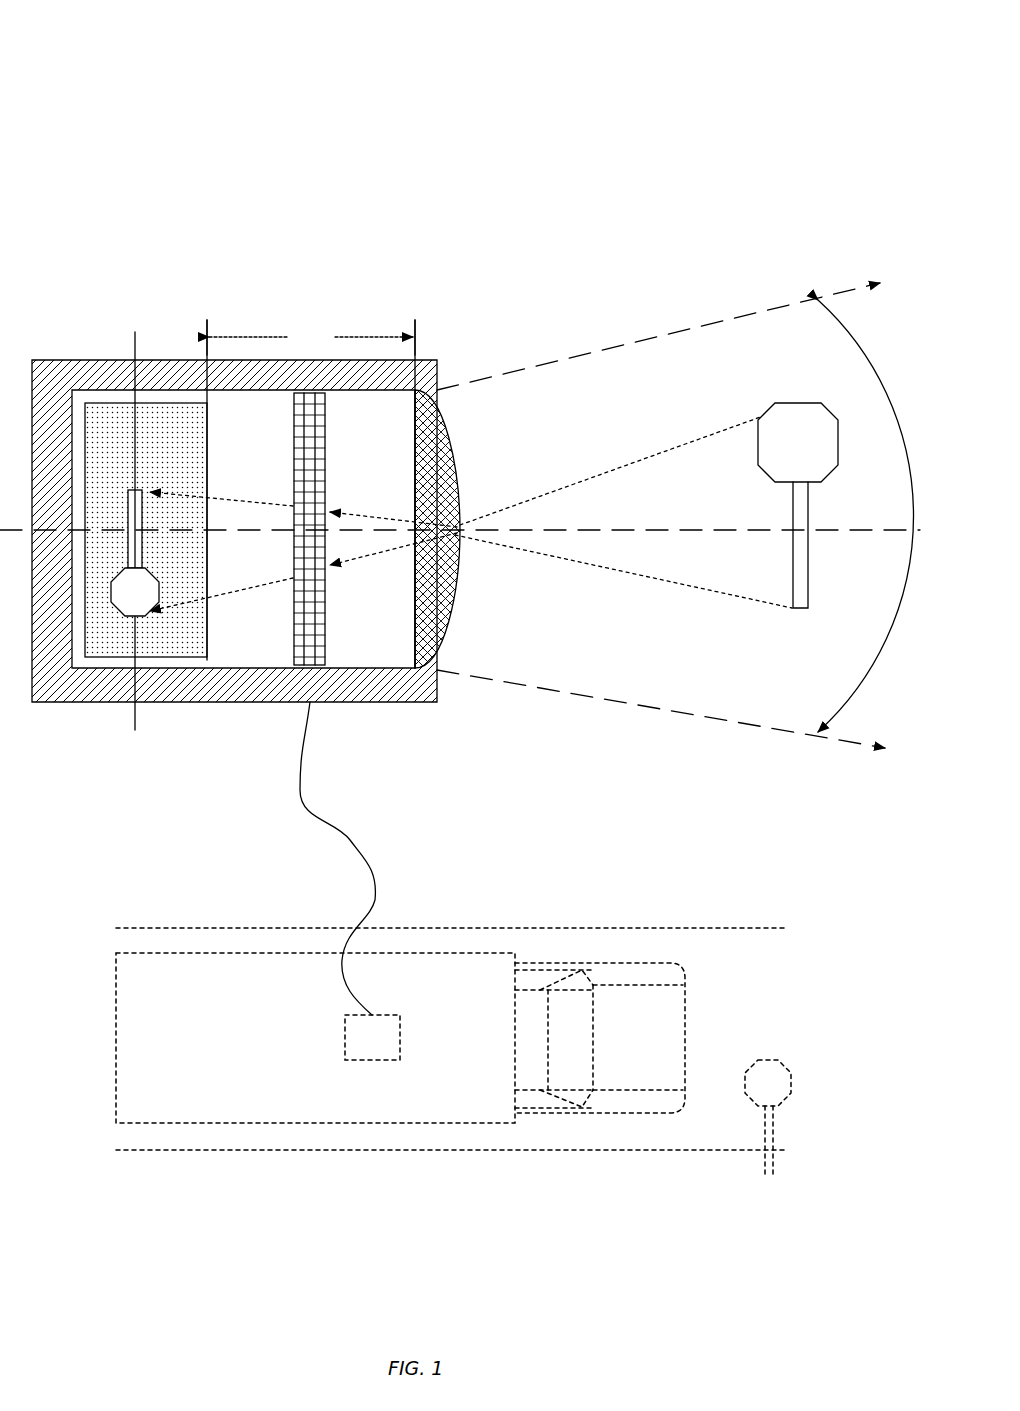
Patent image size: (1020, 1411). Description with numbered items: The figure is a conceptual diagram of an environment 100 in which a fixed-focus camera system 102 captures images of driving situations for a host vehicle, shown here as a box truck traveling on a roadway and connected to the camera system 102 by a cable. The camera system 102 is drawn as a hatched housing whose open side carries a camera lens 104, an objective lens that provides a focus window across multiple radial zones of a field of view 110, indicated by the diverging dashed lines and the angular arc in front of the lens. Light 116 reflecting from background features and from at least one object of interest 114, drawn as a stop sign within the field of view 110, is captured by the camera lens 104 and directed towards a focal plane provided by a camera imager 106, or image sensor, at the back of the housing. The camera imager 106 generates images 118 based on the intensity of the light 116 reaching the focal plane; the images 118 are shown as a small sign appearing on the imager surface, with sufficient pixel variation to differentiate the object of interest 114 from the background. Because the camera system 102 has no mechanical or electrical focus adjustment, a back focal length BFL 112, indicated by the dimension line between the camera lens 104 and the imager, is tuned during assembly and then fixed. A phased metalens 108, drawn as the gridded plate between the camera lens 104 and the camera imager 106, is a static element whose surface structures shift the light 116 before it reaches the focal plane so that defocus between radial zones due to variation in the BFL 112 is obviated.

The environment 100 is at (112, 50).
The camera system 102 is at (97, 360).
The camera lens 104 is at (457, 460).
The camera imager 106 is at (207, 478).
The phased metalens 108 is at (325, 470).
The field of view 110 is at (843, 700).
The BFL 112 is at (311, 337).
The object of interest 114 is at (795, 530).
The light 116 is at (655, 447).
The images 118 is at (143, 617).